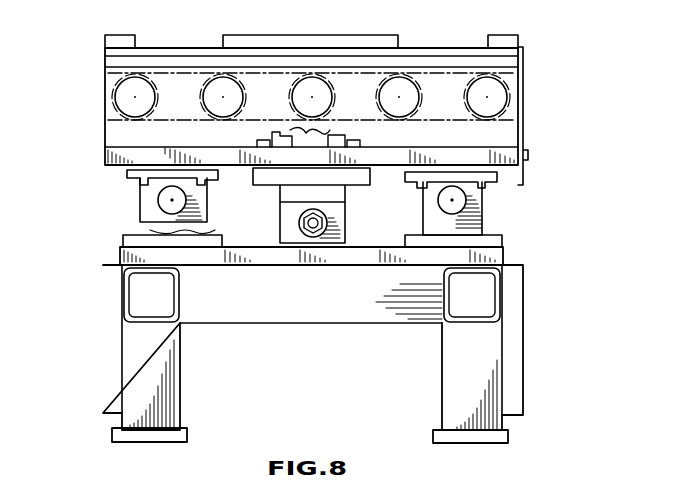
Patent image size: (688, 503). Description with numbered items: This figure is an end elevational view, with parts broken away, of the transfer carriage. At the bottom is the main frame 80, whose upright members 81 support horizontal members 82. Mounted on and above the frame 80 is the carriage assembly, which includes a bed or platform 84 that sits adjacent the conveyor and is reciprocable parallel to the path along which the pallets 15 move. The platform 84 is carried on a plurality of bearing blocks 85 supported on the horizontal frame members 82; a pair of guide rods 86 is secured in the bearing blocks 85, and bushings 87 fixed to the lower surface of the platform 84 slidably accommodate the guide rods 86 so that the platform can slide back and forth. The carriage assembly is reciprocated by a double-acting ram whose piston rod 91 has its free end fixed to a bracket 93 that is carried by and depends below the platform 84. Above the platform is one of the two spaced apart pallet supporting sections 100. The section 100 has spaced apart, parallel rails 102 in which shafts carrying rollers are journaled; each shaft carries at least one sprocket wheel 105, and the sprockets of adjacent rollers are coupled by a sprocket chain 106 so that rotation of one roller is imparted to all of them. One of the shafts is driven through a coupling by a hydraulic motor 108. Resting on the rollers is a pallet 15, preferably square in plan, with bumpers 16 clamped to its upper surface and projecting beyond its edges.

The pallet supporting section 100 is at (476, 30).
The rails 102 is at (510, 119).
The pallet 15 is at (185, 48).
The bumpers 16 is at (105, 40).
The sprocket wheel 105 is at (370, 90).
The sprocket chain 106 is at (217, 134).
The hydraulic motor 108 is at (338, 143).
The platform 84 is at (505, 156).
The bushings 87 is at (146, 196).
The guide rods 86 is at (186, 200).
The bearing blocks 85 is at (158, 234).
The piston rod 91 is at (296, 232).
The bracket 93 is at (328, 232).
The main frame 80 is at (545, 363).
The horizontal members 82 is at (293, 318).
The upright members 81 is at (173, 384).